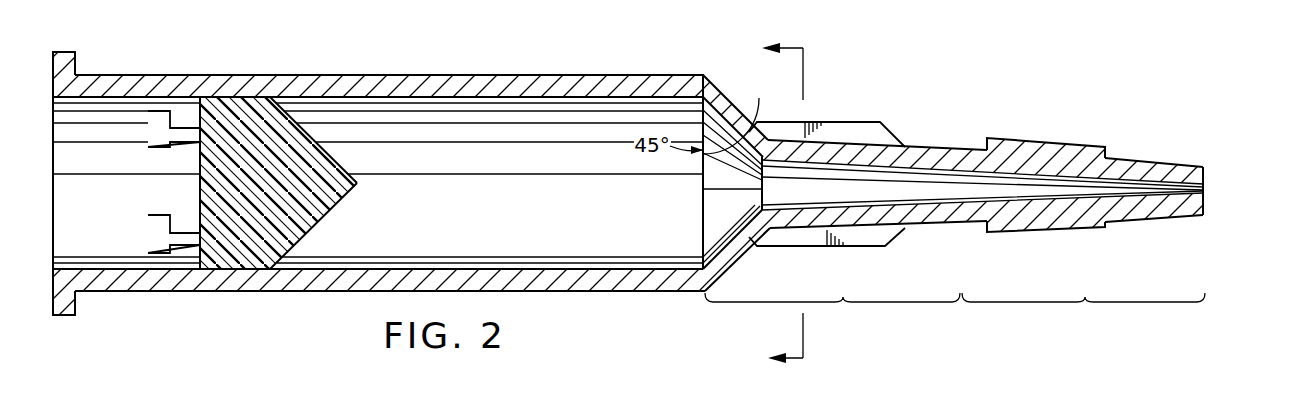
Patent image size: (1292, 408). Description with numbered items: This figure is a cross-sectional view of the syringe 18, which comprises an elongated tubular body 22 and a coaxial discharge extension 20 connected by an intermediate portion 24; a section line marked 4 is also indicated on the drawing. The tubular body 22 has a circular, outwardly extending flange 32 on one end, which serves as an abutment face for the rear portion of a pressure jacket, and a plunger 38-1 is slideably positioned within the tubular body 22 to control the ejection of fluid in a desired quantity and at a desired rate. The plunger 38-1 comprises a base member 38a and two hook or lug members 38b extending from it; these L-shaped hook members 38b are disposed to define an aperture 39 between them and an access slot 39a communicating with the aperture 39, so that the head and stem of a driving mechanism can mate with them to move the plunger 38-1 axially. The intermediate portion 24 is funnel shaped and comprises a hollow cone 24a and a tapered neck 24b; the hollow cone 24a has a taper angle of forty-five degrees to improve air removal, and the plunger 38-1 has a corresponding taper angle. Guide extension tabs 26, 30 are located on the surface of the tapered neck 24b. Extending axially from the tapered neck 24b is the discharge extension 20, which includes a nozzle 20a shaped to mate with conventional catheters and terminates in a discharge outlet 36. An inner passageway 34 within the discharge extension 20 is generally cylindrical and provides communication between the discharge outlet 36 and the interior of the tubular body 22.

The syringe 18 is at (596, 63).
The discharge extension 20 is at (1083, 246).
The nozzle 20a is at (1185, 218).
The tubular body 22 is at (556, 278).
The intermediate portion 24 is at (954, 246).
The hollow cone 24a is at (715, 227).
The tapered neck 24b is at (948, 150).
The guide extension tab 26 is at (853, 130).
The guide extension tab 30 is at (868, 242).
The flange 32 is at (74, 63).
The inner passageway 34 is at (1025, 192).
The discharge outlet 36 is at (1205, 190).
The plunger 38-1 is at (352, 157).
The base member 38a is at (313, 207).
The hook members 38b is at (163, 243).
The aperture 39 is at (188, 187).
The access slot 39a is at (160, 182).
The section line 4- 4 is at (772, 203).